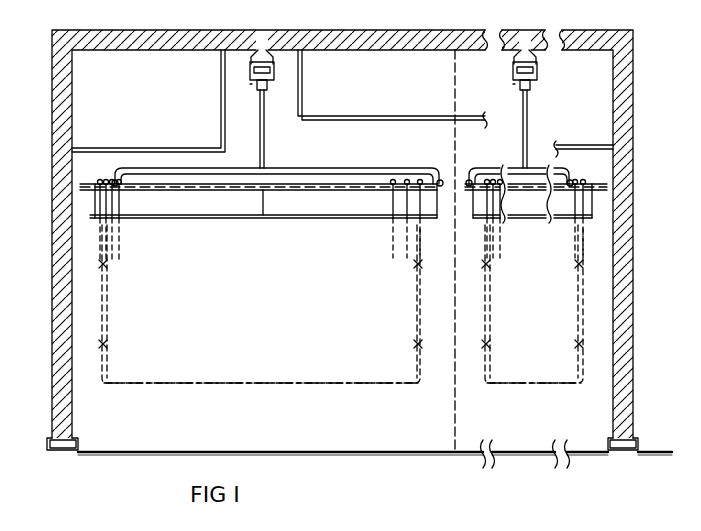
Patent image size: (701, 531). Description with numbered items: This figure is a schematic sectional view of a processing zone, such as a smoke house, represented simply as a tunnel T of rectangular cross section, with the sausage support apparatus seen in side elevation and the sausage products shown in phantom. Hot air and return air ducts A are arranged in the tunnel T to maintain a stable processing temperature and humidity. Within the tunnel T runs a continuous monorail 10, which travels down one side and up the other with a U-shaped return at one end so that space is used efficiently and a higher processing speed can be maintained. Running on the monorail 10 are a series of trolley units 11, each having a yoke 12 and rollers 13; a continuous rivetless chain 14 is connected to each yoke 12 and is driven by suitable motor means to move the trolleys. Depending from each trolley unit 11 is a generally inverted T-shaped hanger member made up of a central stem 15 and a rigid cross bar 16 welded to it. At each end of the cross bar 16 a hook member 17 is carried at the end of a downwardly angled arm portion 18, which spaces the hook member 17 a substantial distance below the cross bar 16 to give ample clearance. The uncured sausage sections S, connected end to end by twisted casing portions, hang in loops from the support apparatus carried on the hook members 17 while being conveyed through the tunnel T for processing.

The tunnel T is at (64, 386).
The hot air and return air ducts A is at (146, 63).
The sausage sections S is at (116, 256).
The monorail 10 is at (405, 59).
The trolley unit 11 is at (283, 72).
The yoke 12 is at (269, 82).
The rollers 13 is at (257, 52).
The rivetless chain 14 is at (250, 87).
The central stem 15 is at (260, 120).
The cross bar 16 is at (292, 168).
The hook member 17 is at (120, 196).
The downwardly angled arm portion 18 is at (118, 167).